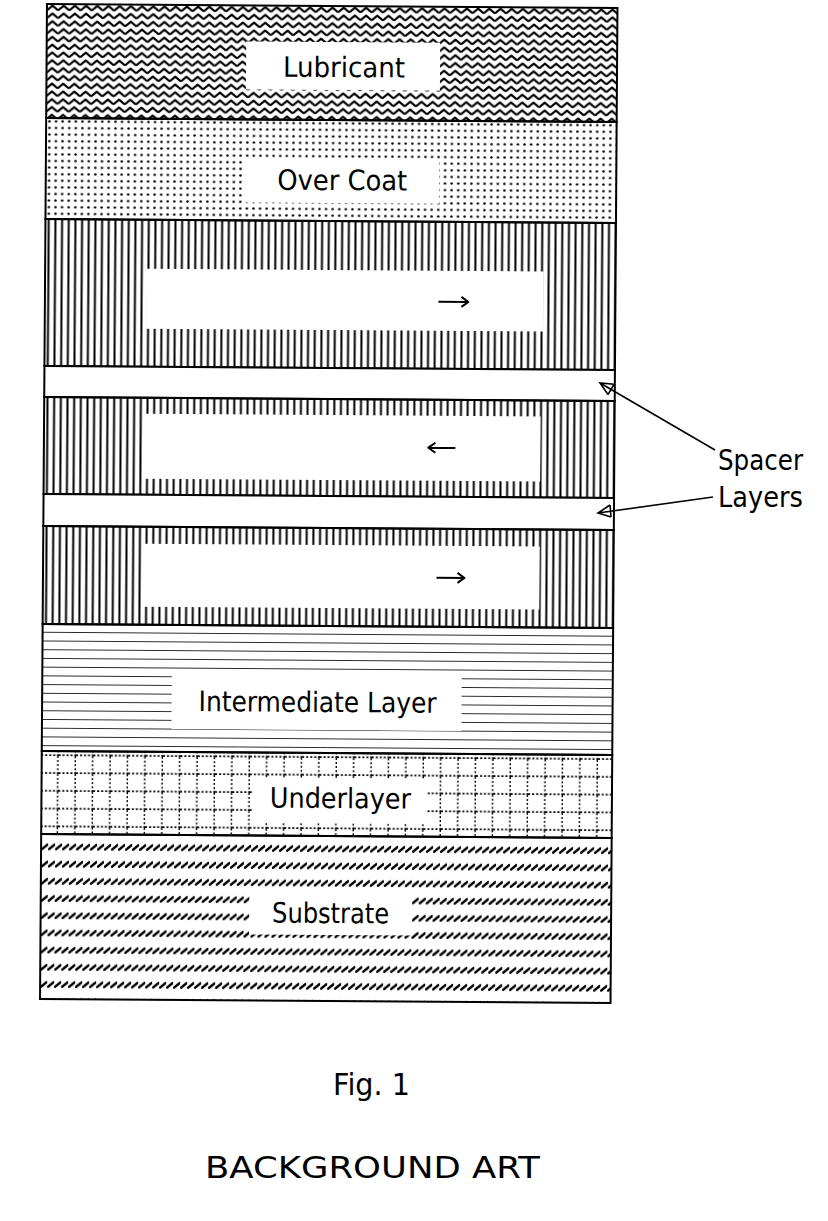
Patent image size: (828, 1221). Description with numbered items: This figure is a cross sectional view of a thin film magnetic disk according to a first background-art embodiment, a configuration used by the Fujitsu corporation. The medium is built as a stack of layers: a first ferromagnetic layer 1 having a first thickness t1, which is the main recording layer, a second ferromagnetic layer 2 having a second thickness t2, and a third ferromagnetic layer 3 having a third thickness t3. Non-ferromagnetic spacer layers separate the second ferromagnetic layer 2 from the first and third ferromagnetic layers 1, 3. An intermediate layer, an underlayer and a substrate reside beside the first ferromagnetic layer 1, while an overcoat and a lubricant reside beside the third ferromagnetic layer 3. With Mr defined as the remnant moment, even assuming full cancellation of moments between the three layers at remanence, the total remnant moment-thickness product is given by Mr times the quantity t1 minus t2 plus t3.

The first ferromagnetic layer L1 1 is at (330, 294).
The second ferromagnetic layer L2 2 is at (329, 447).
The third ferromagnetic layer L3 3 is at (328, 577).
The first thickness t1 is at (476, 303).
The second thickness t2 is at (466, 448).
The third thickness t3 is at (473, 578).